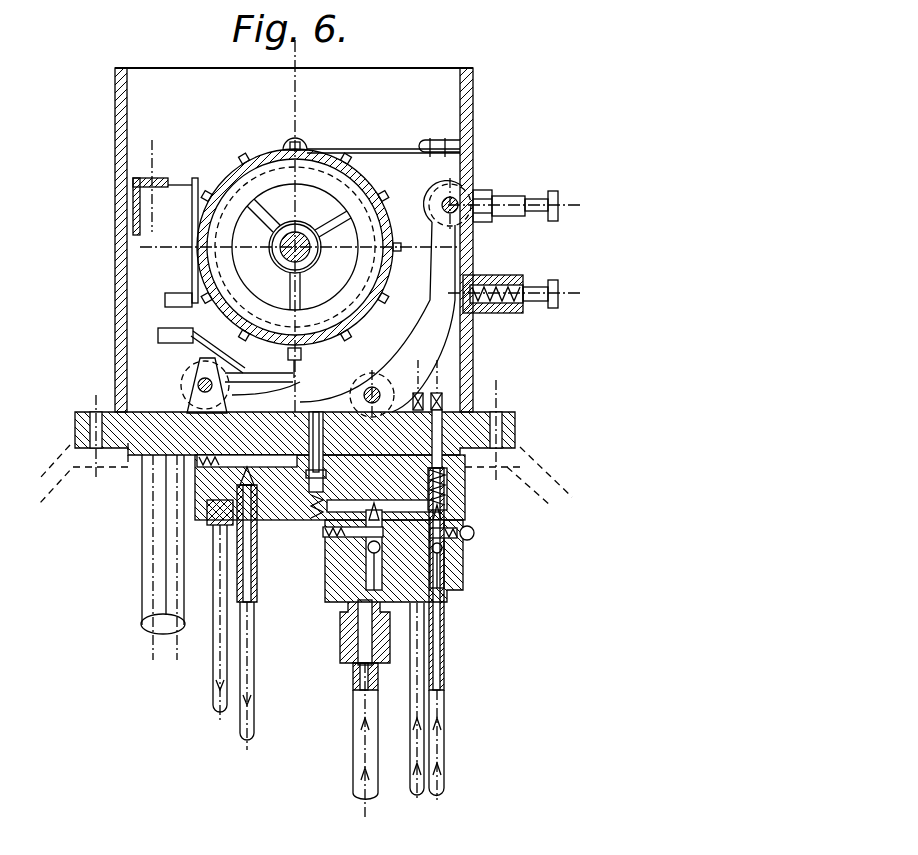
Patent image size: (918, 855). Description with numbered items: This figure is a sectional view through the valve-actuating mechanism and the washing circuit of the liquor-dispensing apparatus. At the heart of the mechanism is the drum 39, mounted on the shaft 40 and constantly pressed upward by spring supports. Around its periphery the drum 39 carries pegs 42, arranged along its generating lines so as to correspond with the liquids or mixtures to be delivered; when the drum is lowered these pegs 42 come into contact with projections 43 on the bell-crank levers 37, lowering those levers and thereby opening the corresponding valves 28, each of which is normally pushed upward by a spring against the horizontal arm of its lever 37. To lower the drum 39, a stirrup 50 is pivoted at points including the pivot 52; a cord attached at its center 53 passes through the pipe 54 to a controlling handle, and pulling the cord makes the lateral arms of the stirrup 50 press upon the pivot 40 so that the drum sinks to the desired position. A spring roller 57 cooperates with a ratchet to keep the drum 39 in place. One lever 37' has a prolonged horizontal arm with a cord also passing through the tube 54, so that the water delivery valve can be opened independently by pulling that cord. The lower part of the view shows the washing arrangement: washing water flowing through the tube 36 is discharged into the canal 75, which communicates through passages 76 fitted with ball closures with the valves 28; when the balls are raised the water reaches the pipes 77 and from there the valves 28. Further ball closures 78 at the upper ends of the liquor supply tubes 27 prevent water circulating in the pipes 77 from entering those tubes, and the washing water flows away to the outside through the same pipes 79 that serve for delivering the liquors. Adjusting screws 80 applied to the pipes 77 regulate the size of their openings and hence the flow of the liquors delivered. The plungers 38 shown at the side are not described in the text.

The liquor supply tube 27 is at (432, 664).
The valve 28 is at (318, 510).
The tube 36 is at (362, 752).
The bell-crank lever 37 is at (381, 300).
The lever 37' is at (183, 353).
The pins 38 is at (536, 205).
The drum 39 is at (272, 152).
The shaft 40 is at (302, 254).
The pegs 42 is at (236, 153).
The projections 43 is at (302, 362).
The stirrup 50 is at (182, 185).
The pivot 52 is at (454, 204).
The cord attachment point 53 is at (138, 212).
The pipe 54 is at (152, 526).
The spring roller 57 is at (306, 148).
The canal 75 is at (384, 605).
The passage 76 is at (366, 552).
The pipe 77 is at (408, 508).
The ball closure 78 is at (442, 544).
The delivery pipe 79 is at (218, 712).
The adjusting screw 80 is at (441, 402).